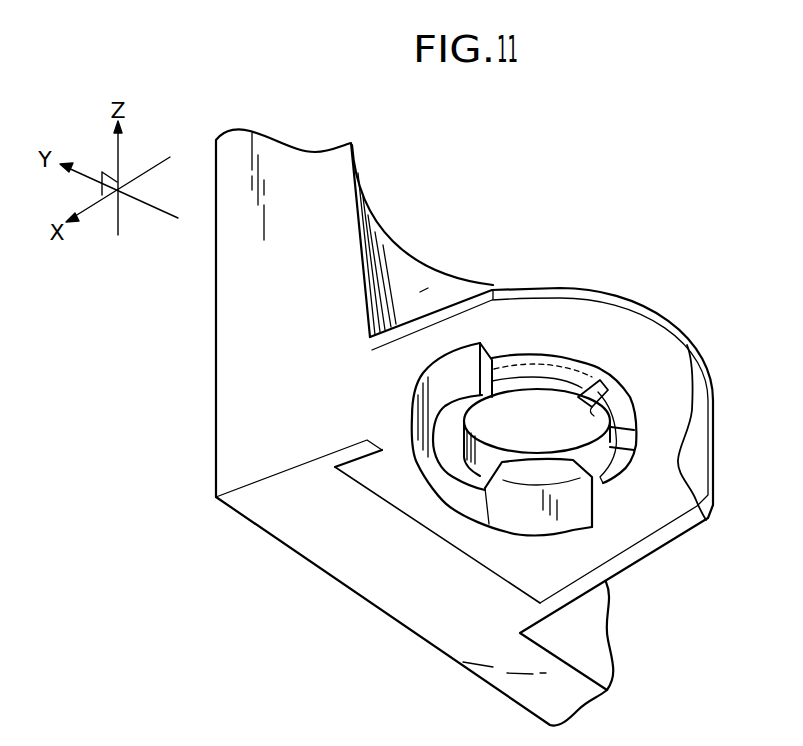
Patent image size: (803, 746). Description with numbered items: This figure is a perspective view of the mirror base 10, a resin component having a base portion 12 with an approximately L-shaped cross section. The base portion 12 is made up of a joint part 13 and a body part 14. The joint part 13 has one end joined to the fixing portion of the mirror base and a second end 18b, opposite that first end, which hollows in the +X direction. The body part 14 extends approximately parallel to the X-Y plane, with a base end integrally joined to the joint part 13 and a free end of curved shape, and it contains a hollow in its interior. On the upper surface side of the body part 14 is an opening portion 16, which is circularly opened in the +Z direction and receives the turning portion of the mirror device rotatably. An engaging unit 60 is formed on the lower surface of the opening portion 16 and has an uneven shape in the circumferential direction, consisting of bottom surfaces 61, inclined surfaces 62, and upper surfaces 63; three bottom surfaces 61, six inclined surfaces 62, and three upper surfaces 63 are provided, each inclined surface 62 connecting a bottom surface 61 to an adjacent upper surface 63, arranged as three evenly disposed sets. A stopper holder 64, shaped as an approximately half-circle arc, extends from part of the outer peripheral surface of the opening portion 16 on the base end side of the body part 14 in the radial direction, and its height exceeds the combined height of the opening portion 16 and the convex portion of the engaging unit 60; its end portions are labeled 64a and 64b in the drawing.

The mirror base 10 is at (630, 217).
The base portion 12 is at (428, 83).
The joint part 13 is at (294, 173).
The body part 14 is at (407, 322).
The opening portion 16 is at (622, 417).
The second end 18b is at (433, 281).
The engaging unit 60 is at (598, 350).
The bottom surfaces 61 is at (562, 387).
The inclined surfaces 62 is at (617, 407).
The upper surfaces 63 is at (628, 441).
The stopper holder 64 is at (456, 478).
The rear tab 64a is at (493, 358).
The front tab 64b is at (590, 510).